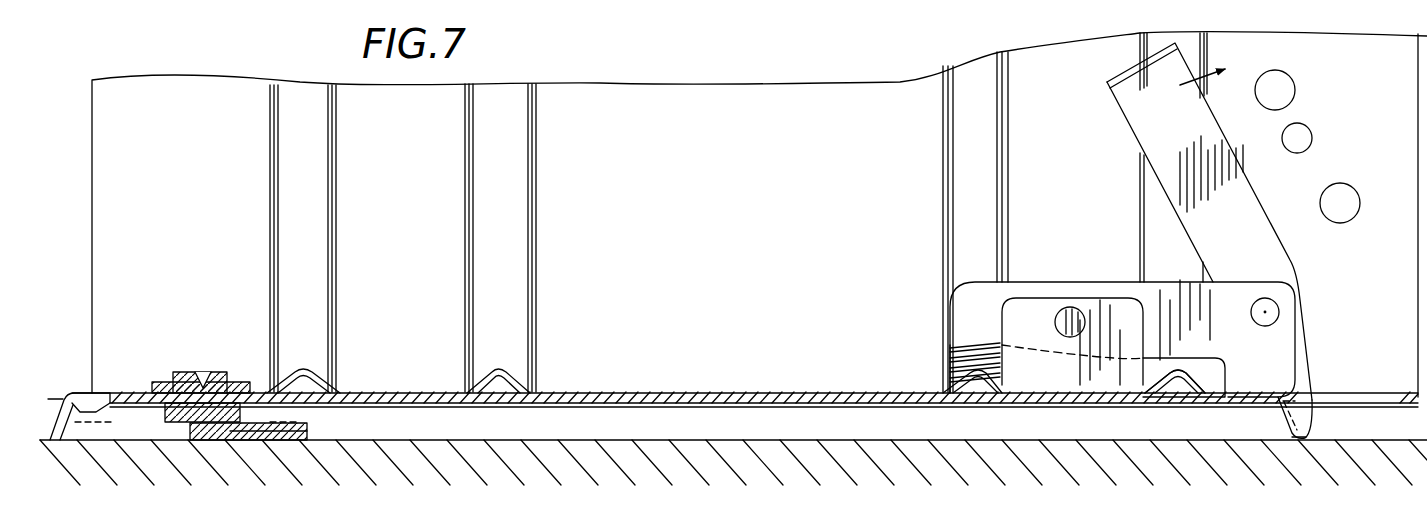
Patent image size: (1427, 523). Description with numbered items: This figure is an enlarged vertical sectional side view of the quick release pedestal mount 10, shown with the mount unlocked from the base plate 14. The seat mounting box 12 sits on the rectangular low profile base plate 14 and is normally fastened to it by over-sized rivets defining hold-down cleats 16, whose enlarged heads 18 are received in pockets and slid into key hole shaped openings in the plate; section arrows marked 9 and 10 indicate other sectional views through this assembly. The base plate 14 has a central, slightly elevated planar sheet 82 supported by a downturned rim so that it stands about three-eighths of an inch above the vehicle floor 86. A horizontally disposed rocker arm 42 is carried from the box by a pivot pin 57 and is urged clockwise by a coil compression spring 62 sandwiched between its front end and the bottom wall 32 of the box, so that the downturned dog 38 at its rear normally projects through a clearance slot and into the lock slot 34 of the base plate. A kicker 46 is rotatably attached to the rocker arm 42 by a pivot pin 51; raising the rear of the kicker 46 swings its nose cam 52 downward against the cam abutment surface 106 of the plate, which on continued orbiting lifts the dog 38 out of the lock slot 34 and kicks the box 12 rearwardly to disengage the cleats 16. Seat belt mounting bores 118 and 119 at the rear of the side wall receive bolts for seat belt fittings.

The section line 9- 9 is at (57, 384).
The quick release pedestal mount 10 is at (82, 434).
The seat mounting box 12 is at (673, 306).
The base plate 14 is at (335, 407).
The hold-down cleat 16 is at (226, 372).
The enlarged head 18 is at (165, 420).
The bottom wall 32 is at (643, 392).
The lock slot 34 is at (1160, 407).
The dog 38 is at (1232, 393).
The rocker arm 42 is at (1078, 282).
The kicker 46 is at (1108, 96).
The pivot pin 51 is at (1250, 313).
The nose cam 52 is at (1296, 445).
The pivot pin 57 is at (1055, 324).
The coil compression spring 62 is at (948, 382).
The planar sheet 82 is at (668, 405).
The floor 86 is at (765, 440).
The cam abutment surface 106 is at (1280, 452).
The seat belt mounting bore 118 is at (1292, 80).
The seat belt mounting bore 119 is at (1313, 138).